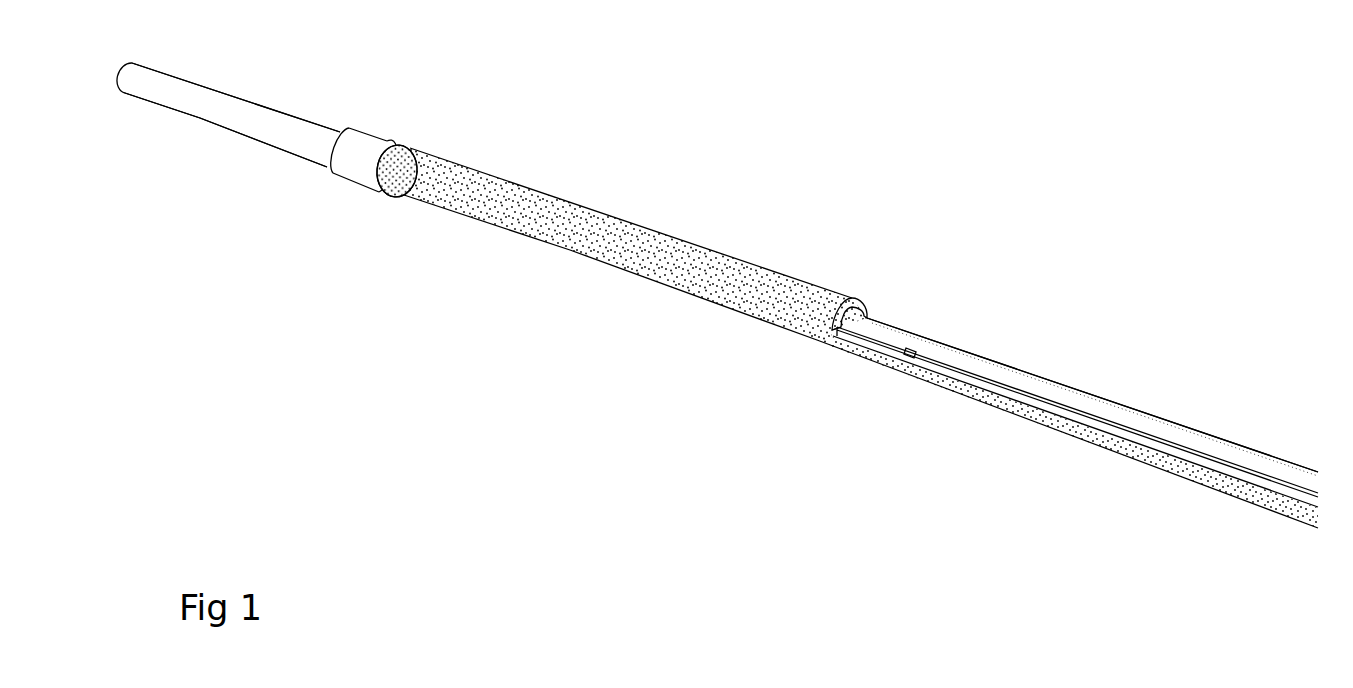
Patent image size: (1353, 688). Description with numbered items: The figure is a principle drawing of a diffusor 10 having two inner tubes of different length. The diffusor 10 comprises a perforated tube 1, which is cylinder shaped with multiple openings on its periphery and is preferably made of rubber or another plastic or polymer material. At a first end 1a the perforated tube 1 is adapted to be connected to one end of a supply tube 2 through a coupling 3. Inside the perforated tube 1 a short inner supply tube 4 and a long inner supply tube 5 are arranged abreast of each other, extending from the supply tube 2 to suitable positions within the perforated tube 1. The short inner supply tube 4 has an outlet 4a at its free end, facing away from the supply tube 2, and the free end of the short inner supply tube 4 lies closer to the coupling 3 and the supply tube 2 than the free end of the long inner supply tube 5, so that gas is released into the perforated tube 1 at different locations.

The perforated tube 1 is at (612, 212).
The first end 1a is at (329, 200).
The supply tube 2 is at (238, 95).
The coupling 3 is at (373, 130).
The short inner supply tube 4 is at (901, 331).
The outlet 4a is at (919, 342).
The long inner supply tube 5 is at (1122, 401).
The diffusor 10 is at (463, 242).